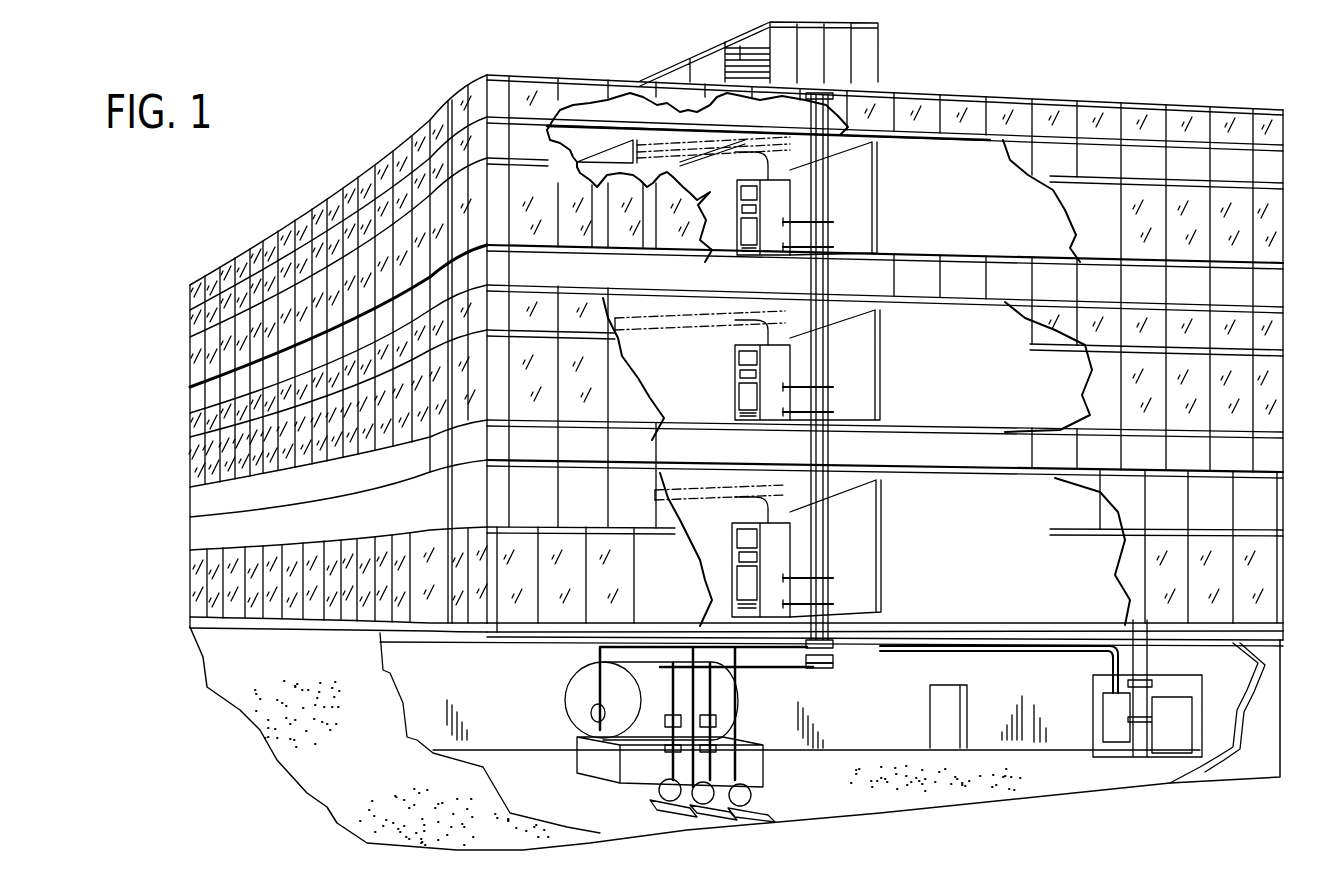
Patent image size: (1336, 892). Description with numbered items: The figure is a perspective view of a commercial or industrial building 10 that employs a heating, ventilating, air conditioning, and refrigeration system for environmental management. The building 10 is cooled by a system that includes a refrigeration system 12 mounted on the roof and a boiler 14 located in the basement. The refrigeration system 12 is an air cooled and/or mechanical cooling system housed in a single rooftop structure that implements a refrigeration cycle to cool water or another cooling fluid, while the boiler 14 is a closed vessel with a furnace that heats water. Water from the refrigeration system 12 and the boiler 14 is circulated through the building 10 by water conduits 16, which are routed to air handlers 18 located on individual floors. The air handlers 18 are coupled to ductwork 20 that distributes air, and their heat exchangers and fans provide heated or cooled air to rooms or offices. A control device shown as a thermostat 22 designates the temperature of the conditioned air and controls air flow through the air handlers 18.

The building 10 is at (1143, 106).
The refrigeration system 12 is at (731, 38).
The boiler 14 is at (580, 695).
The water conduits 16 is at (829, 600).
The air handlers 18 is at (790, 187).
The ductwork 20 is at (707, 165).
The thermostat 22 is at (758, 210).